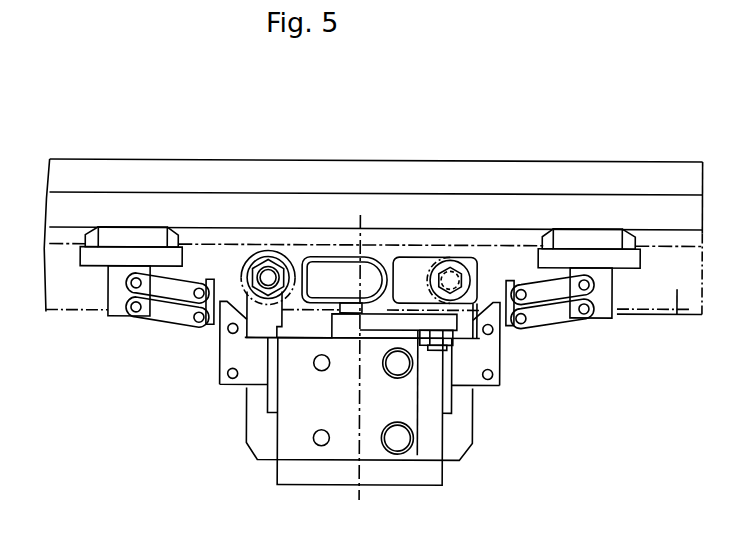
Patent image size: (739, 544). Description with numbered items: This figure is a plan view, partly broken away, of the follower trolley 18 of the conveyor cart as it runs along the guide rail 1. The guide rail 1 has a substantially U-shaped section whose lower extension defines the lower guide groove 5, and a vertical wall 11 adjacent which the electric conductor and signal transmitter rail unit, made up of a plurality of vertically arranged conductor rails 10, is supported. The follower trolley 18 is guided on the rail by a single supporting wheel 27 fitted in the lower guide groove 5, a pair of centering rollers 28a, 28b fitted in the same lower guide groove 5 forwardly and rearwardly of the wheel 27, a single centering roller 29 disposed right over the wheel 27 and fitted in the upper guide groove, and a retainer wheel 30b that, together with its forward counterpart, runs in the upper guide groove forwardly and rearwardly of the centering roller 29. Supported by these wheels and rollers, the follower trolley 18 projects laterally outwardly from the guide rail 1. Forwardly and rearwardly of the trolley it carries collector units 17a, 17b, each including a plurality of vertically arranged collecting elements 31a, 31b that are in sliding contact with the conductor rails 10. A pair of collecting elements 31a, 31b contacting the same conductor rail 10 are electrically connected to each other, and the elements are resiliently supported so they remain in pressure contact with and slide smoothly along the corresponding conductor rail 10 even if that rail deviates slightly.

The guide rail 1 is at (79, 155).
The vertical wall 11 is at (643, 173).
The conductor rails 10 is at (650, 233).
The lower guide groove 5 is at (679, 318).
The collecting elements 31a is at (133, 237).
The collector unit 17a is at (175, 225).
The collecting elements 31b is at (595, 237).
The collector unit 17b is at (552, 226).
The centering roller 28a is at (263, 251).
The supporting wheel 27 is at (322, 262).
The centering roller 29 is at (375, 252).
The retainer wheel 30b is at (410, 262).
The centering roller 28b is at (453, 252).
The follower trolley 18 is at (300, 413).